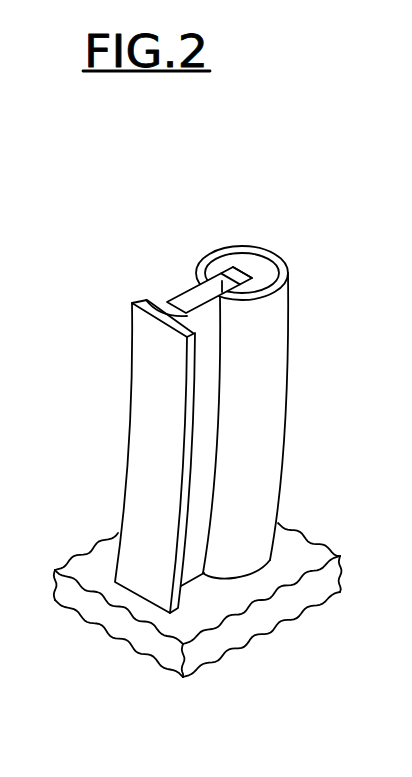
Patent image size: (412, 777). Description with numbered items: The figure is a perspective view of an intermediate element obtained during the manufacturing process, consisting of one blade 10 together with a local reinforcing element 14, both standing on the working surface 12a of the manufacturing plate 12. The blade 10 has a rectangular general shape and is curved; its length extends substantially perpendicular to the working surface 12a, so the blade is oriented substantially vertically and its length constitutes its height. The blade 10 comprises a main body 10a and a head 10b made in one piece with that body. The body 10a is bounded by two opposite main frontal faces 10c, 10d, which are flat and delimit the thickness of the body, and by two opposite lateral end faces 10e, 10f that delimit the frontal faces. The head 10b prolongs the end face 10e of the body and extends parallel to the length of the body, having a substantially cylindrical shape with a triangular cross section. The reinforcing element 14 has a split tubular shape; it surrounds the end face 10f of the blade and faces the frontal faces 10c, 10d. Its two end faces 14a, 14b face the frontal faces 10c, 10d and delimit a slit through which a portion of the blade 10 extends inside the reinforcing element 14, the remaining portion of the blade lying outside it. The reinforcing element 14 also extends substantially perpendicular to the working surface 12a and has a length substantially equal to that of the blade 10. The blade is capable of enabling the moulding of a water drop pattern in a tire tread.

The blade 10 is at (206, 396).
The main body 10a is at (207, 437).
The head 10b is at (141, 479).
The main frontal face 10c is at (212, 337).
The main frontal face 10d is at (187, 288).
The lateral end face 10e is at (136, 302).
The lateral end face 10f is at (247, 267).
The manufacturing plate 12 is at (198, 614).
The working surface 12a is at (293, 567).
The reinforcing element 14 is at (278, 248).
The end face 14a is at (266, 290).
The end face 14b is at (210, 282).